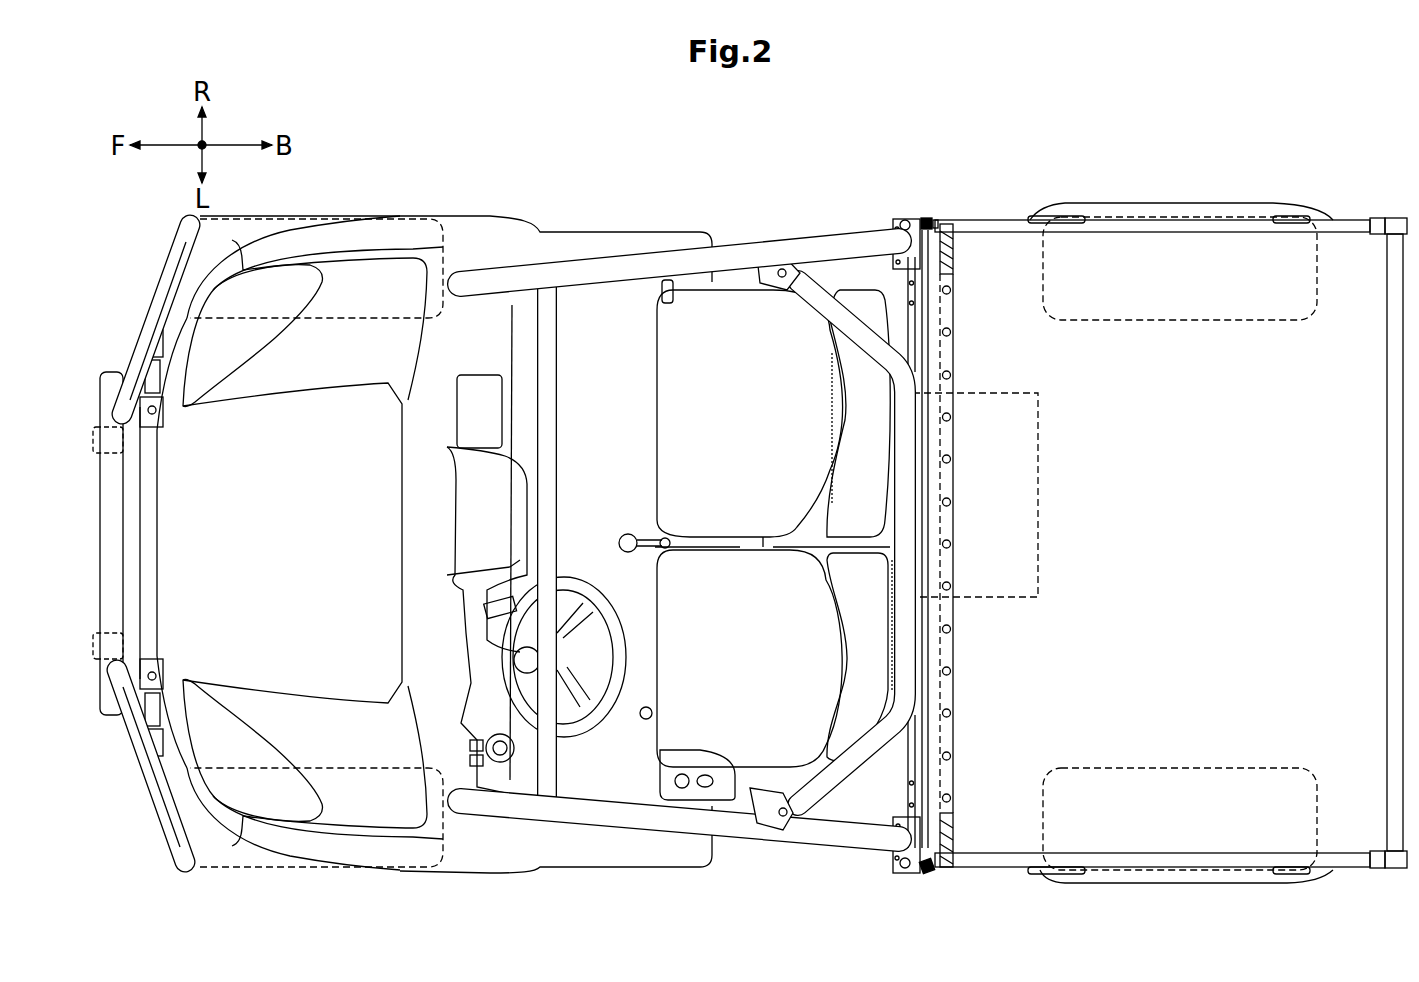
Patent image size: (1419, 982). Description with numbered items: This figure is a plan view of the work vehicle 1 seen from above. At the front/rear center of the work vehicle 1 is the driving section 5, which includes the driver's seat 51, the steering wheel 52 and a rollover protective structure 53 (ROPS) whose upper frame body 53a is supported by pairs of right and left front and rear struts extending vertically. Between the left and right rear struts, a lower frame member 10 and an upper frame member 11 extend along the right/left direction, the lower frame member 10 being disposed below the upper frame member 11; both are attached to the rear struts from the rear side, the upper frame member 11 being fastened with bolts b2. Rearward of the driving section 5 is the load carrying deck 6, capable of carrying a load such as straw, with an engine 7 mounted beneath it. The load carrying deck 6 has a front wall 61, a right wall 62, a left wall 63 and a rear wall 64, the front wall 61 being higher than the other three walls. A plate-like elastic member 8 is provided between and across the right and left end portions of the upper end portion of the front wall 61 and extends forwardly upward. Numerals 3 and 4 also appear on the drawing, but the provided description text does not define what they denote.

The work vehicle 1 is at (462, 163).
The front guard 3 is at (213, 863).
The rear wheel 4 is at (1258, 768).
The driving section 5 is at (585, 488).
The load carrying deck 6 is at (1343, 217).
The engine 7 is at (1040, 480).
The plate-like elastic member 8 is at (958, 656).
The lower frame member 10 is at (945, 818).
The upper frame member 11 is at (905, 792).
The driver's seat 51 is at (683, 727).
The steering wheel 52 is at (617, 543).
The rollover protective structure 53 is at (808, 240).
The upper frame body 53a is at (667, 263).
The front wall 61 is at (953, 257).
The right wall 62 is at (1165, 226).
The left wall 63 is at (1138, 860).
The rear wall 64 is at (1397, 528).
The bolts b2 is at (893, 253).